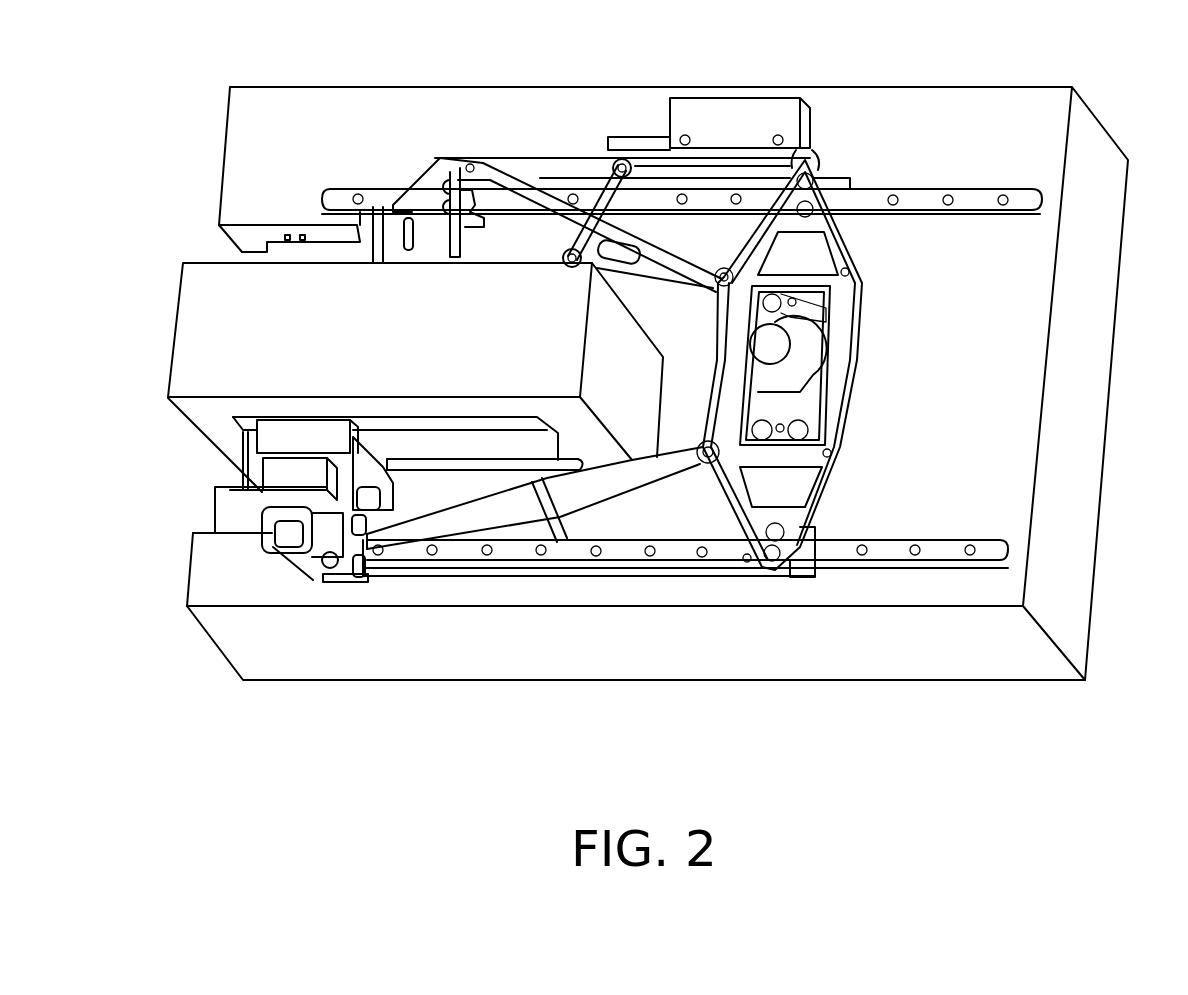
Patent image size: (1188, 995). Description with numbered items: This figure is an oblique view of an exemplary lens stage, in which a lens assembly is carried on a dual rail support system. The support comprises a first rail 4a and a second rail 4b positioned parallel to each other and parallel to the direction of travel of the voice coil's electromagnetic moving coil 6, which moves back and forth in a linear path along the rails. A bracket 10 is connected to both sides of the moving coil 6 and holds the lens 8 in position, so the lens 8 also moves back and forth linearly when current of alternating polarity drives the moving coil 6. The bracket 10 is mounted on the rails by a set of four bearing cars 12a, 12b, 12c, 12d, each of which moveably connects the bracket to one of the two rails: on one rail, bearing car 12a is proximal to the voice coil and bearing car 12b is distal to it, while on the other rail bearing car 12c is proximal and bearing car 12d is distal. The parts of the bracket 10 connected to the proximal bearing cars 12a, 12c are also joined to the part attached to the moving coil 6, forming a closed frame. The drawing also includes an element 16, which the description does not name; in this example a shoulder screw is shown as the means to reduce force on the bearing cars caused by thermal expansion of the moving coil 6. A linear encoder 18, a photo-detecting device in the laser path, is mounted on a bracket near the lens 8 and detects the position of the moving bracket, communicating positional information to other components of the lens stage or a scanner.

The first rail 4a is at (972, 190).
The second rail 4b is at (997, 545).
The moving coil 6 is at (262, 497).
The lens 8 is at (805, 352).
The bracket 10 is at (845, 465).
The bearing car 12a is at (437, 157).
The bearing car 12b is at (822, 168).
The bearing car 12c is at (333, 580).
The bearing car 12d is at (805, 578).
The lower clamp 16 is at (273, 533).
The linear encoder 18 is at (745, 110).